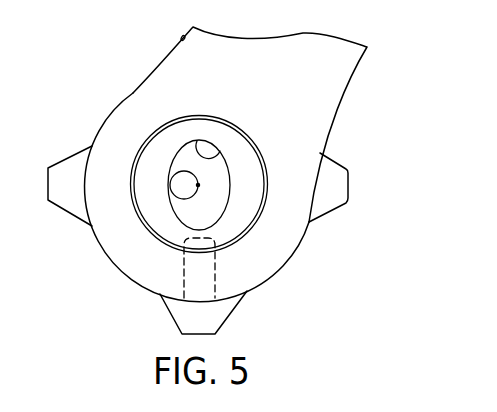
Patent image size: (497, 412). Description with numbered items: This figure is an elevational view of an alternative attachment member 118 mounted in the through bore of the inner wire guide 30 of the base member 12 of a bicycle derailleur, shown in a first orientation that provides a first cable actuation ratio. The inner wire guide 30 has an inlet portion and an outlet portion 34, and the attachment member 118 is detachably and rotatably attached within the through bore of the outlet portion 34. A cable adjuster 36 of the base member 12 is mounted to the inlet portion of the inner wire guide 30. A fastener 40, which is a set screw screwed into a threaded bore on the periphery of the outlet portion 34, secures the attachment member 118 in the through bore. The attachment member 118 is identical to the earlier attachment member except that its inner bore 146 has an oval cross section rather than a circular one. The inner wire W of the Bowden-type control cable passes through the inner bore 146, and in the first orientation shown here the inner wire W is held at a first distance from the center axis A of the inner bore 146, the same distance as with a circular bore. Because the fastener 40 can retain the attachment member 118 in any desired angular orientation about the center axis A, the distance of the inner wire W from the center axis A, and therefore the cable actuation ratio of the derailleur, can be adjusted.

The base member 12 is at (343, 91).
The inner wire guide 30 is at (272, 284).
The outlet portion 34 is at (130, 123).
The cable adjuster 36 is at (352, 175).
The fastener 40 is at (184, 268).
The attachment member 118 is at (248, 239).
The inner bore 146 is at (198, 143).
The center axis A is at (198, 185).
The inner wire W is at (174, 212).